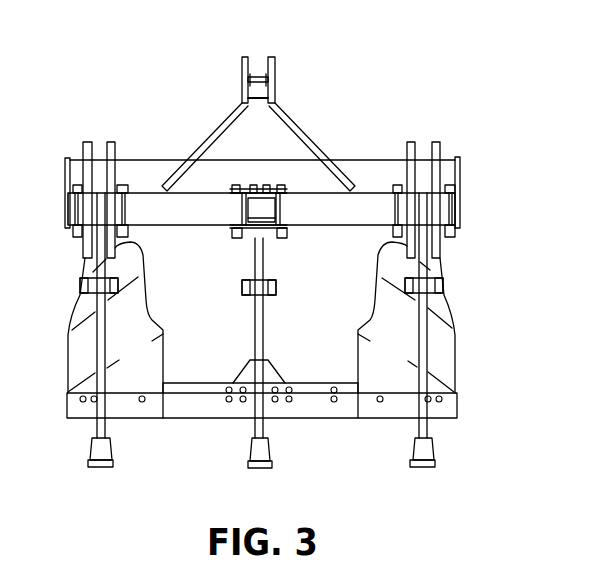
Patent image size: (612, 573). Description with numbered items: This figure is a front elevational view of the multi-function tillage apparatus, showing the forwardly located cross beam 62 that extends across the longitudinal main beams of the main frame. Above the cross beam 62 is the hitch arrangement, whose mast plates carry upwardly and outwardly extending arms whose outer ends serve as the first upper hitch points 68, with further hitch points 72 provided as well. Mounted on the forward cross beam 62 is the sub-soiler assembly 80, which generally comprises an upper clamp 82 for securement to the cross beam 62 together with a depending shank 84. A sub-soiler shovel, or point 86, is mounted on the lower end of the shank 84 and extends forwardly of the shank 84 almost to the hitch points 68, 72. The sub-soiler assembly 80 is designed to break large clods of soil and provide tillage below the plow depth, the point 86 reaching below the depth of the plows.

The forwardly located cross beam 62 is at (357, 208).
The first upper hitch points 68 is at (258, 73).
The hitch points 72 is at (100, 158).
The sub-soiler assembly 80 is at (243, 263).
The upper clamp 82 is at (285, 210).
The shank 84 is at (267, 328).
The point 86 is at (258, 468).